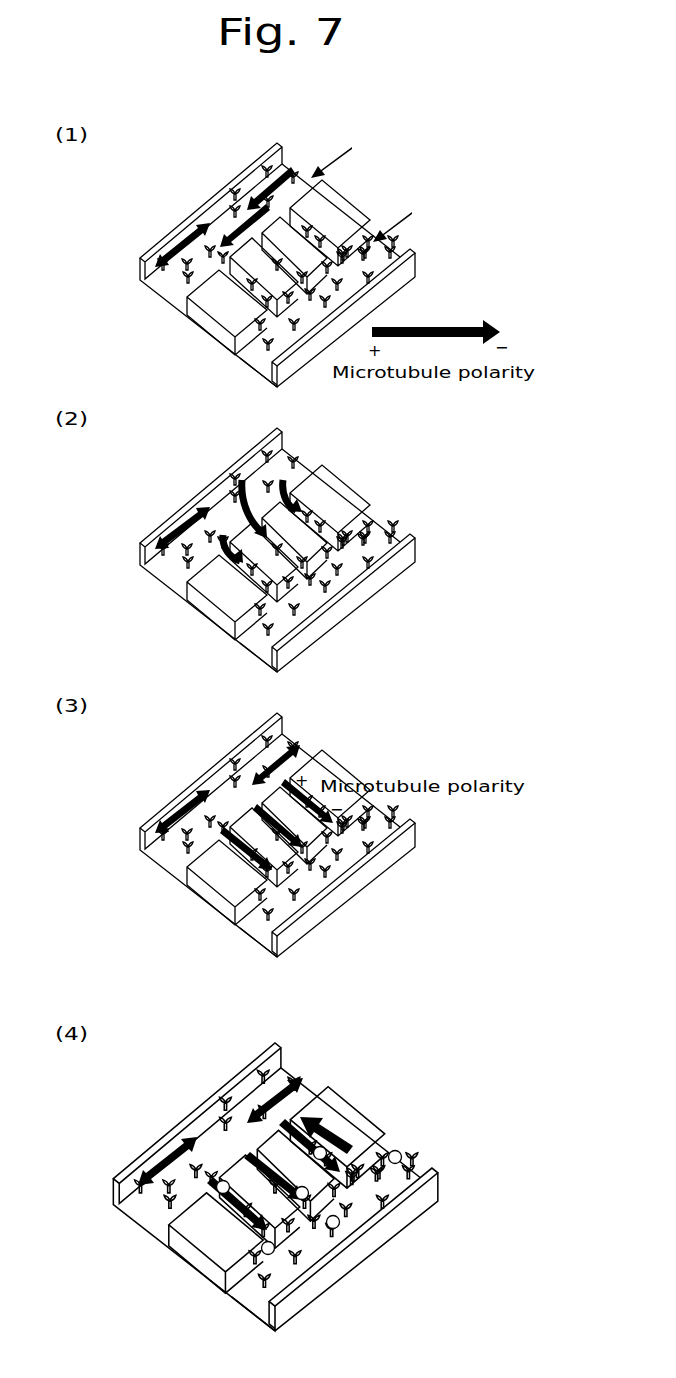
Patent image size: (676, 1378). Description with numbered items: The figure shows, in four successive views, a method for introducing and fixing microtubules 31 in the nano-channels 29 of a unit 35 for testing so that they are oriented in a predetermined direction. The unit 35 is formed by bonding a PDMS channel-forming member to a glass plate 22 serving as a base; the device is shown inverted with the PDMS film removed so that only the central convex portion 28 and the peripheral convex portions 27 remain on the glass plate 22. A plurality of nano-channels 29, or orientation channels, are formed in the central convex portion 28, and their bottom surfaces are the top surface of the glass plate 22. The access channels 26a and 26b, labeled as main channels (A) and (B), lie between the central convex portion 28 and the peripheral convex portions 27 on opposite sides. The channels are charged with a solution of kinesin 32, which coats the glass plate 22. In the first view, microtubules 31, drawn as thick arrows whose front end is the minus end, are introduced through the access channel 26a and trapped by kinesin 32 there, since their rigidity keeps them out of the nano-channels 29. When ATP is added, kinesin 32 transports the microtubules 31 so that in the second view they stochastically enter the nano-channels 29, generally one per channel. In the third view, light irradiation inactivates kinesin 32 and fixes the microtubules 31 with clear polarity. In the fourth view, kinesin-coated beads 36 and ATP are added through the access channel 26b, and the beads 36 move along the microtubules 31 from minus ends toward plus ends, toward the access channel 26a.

The glass plate 22 is at (264, 747).
The access channel 26a is at (319, 656).
The access channel 26b is at (466, 688).
The peripheral convex portion 27 is at (197, 673).
The central convex portion 28 is at (257, 736).
The nano-channel 29 is at (275, 758).
The microtubule 31 is at (244, 714).
The kinesin 32 is at (247, 846).
The unit 35 is at (398, 789).
The kinesin-coated bead 36 is at (401, 1154).